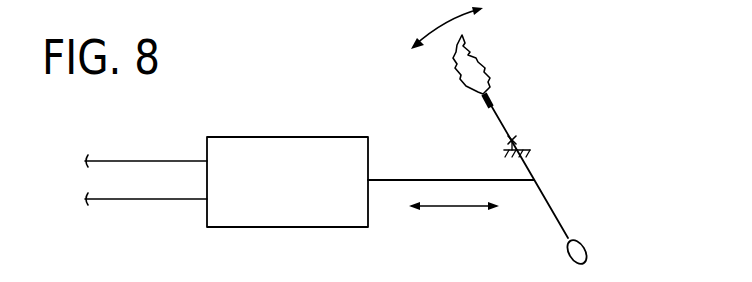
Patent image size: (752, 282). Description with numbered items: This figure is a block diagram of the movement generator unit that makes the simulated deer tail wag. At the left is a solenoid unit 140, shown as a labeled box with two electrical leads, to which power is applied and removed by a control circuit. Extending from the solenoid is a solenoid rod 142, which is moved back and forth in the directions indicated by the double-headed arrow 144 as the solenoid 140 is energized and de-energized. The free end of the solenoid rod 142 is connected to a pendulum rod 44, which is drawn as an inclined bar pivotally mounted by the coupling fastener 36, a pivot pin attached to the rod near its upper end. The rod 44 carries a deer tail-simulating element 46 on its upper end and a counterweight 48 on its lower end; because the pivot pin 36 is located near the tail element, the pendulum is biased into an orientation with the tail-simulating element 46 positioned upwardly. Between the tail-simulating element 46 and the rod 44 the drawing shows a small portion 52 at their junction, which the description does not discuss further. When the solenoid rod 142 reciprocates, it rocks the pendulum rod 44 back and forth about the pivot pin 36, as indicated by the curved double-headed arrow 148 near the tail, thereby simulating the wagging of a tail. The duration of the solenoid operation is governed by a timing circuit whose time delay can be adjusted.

The coupling fastener 36 is at (516, 138).
The rod 44 is at (541, 189).
The deer tail-simulating element 46 is at (478, 72).
The counterweight 48 is at (587, 251).
The leaf attachment 52 is at (492, 100).
The solenoid unit 140 is at (265, 130).
The solenoid rod 142 is at (414, 178).
The double-headed arrow 144 is at (453, 206).
The double-headed arrow 148 is at (428, 35).